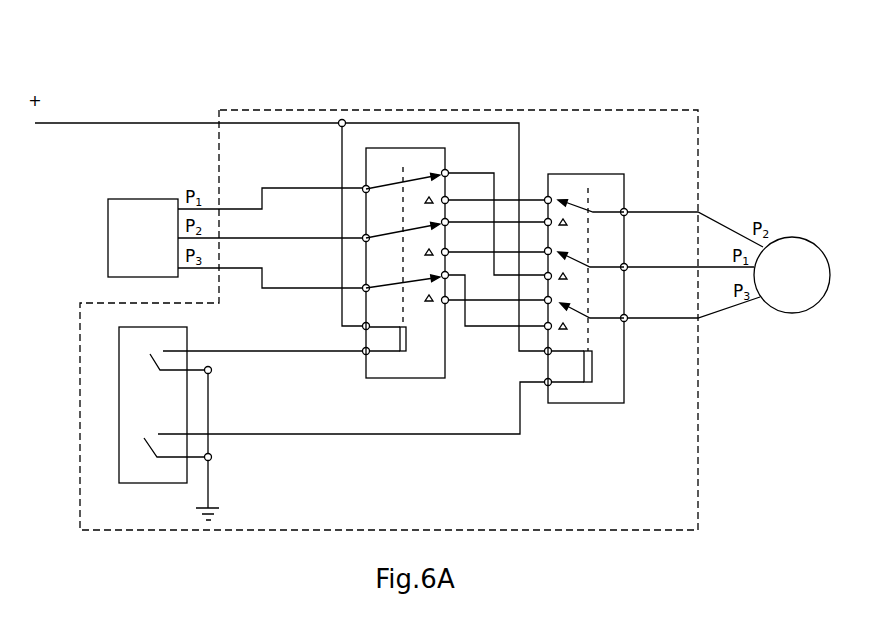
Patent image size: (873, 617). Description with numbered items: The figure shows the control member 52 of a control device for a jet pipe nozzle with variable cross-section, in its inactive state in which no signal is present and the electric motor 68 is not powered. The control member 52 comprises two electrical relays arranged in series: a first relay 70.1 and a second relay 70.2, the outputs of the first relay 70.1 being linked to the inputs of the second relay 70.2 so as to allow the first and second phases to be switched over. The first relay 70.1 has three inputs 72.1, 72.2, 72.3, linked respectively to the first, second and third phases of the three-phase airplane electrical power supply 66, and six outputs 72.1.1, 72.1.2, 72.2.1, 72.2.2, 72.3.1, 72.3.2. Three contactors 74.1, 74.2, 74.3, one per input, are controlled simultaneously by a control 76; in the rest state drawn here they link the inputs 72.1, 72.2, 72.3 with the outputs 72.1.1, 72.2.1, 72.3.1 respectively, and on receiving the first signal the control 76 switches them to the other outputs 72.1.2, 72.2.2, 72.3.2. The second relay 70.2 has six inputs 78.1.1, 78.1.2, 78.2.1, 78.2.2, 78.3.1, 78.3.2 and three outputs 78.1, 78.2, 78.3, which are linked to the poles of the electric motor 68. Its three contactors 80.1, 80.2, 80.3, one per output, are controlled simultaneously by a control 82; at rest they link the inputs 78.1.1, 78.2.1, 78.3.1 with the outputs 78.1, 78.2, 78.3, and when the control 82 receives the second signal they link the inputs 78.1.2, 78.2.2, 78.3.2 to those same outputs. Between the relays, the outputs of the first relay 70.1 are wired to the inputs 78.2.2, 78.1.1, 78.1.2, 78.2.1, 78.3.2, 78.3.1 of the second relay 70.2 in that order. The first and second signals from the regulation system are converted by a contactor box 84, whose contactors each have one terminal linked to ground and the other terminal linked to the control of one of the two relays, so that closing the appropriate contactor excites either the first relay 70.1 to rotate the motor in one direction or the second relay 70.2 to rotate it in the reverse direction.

The control member 52 is at (700, 497).
The airplane electrical power supply 66 is at (126, 186).
The electric motor 68 is at (798, 223).
The first relay 70.1 is at (395, 136).
The second relay 70.2 is at (614, 160).
The input of the first relay 72.1 is at (365, 188).
The input of the first relay 72.2 is at (365, 238).
The input of the first relay 72.3 is at (365, 289).
The output of the first relay 72.1.1 is at (445, 172).
The output of the first relay 72.1.2 is at (445, 199).
The output of the first relay 72.2.1 is at (446, 221).
The output of the first relay 72.2.2 is at (446, 251).
The output of the first relay 72.3.1 is at (447, 277).
The output of the first relay 72.3.2 is at (444, 301).
The contactor 74.1 is at (367, 186).
The contactor 74.2 is at (400, 234).
The contactor 74.3 is at (402, 296).
The control 76 is at (404, 365).
The output of the second relay 78.1 is at (625, 210).
The output of the second relay 78.2 is at (626, 269).
The output of the second relay 78.3 is at (626, 319).
The input of the second relay 78.1.1 is at (549, 199).
The input of the second relay 78.1.2 is at (547, 221).
The input of the second relay 78.2.1 is at (549, 251).
The input of the second relay 78.2.2 is at (549, 277).
The input of the second relay 78.3.1 is at (547, 300).
The input of the second relay 78.3.2 is at (547, 326).
The contactor 80.1 is at (594, 211).
The contactor 80.2 is at (591, 267).
The contactor 80.3 is at (591, 319).
The control 82 is at (590, 396).
The contactor box 84 is at (155, 497).